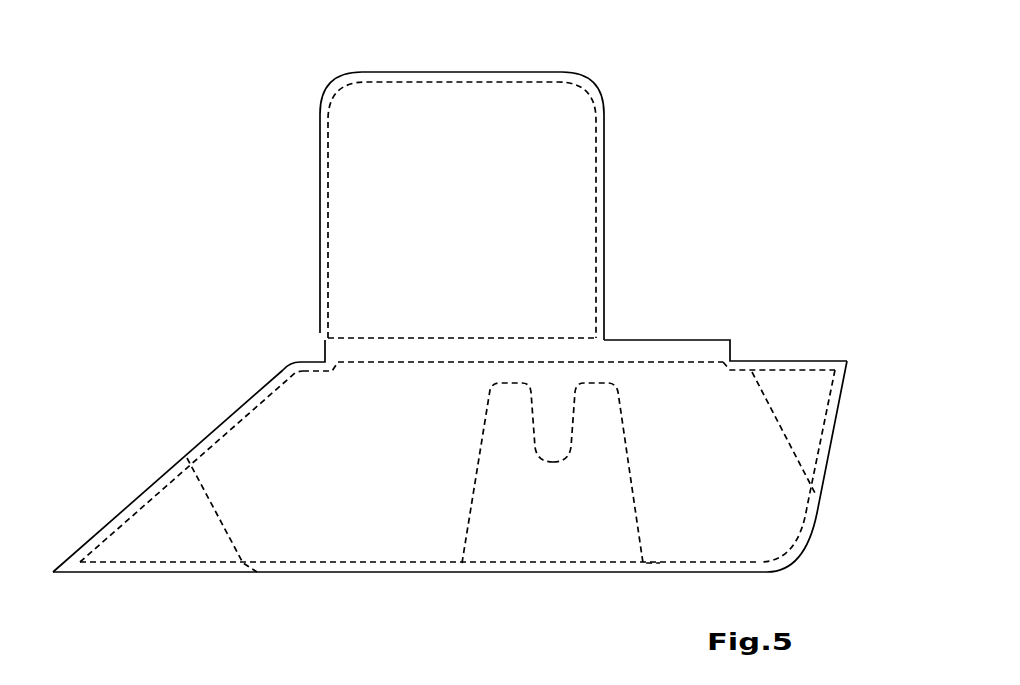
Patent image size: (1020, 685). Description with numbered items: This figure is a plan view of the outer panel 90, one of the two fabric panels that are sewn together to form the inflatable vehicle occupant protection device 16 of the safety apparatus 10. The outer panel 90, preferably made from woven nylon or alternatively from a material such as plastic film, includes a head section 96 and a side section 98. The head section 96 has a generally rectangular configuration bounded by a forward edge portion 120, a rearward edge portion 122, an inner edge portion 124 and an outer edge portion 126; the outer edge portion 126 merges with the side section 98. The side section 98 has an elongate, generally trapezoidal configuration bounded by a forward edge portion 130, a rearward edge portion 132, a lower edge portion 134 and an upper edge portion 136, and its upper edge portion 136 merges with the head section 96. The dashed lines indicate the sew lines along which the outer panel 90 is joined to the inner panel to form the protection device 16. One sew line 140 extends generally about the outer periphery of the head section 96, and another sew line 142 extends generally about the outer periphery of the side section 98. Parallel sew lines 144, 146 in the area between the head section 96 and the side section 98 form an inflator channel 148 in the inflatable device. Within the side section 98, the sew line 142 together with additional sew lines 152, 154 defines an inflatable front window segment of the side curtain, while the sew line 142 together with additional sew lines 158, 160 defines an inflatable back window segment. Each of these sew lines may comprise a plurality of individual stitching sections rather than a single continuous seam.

The safety apparatus 10 is at (186, 167).
The inflatable vehicle occupant protection device 16 is at (174, 226).
The outer panel 90 is at (178, 283).
The head section 96 is at (287, 131).
The side section 98 is at (180, 437).
The forward edge portion 120 is at (318, 197).
The rearward edge portion 122 is at (606, 197).
The inner edge portion 124 is at (457, 72).
The outer edge portion 126 is at (498, 330).
The forward edge portion 130 is at (133, 498).
The rearward edge portion 132 is at (838, 410).
The lower edge portion 134 is at (395, 575).
The upper edge portion 136 is at (390, 383).
The sew line 140 is at (603, 107).
The sew line 142 is at (188, 563).
The sew line 144 is at (368, 338).
The sew line 146 is at (636, 368).
The inflator channel 148 is at (475, 355).
The sew line 152 is at (218, 535).
The sew line 154 is at (475, 500).
The sew line 158 is at (633, 513).
The sew line 160 is at (784, 422).